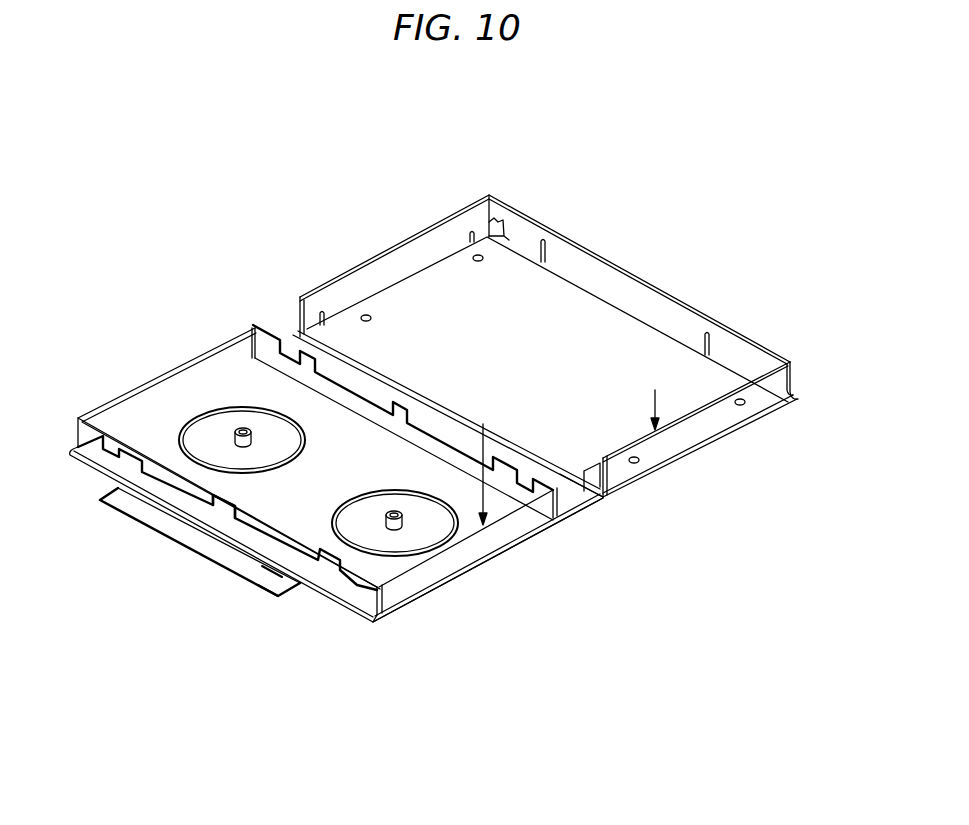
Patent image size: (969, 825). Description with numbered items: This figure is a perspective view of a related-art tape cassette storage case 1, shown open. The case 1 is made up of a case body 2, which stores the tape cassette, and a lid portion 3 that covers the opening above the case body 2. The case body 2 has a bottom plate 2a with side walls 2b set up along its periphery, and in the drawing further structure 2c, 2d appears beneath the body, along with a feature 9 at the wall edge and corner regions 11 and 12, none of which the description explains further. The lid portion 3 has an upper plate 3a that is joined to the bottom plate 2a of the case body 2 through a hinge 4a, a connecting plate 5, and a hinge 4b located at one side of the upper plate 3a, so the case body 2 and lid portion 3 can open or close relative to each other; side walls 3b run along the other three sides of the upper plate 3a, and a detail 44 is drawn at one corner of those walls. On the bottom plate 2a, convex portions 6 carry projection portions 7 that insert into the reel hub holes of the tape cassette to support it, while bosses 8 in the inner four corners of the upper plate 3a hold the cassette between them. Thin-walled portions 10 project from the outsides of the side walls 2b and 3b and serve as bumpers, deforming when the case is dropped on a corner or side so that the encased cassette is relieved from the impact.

The tape cassette storage case 1 is at (248, 225).
The case body 2 is at (163, 352).
The bottom plate 2a is at (237, 372).
The side walls 2b is at (105, 410).
The leg portion 2c is at (258, 574).
The leg portion 2d is at (180, 535).
The lid portion 3 is at (404, 207).
The upper plate 3a is at (573, 310).
The side walls 3b is at (367, 270).
The hinge 4a is at (560, 522).
The hinge 4b is at (610, 500).
The connecting plate 5 is at (585, 498).
The convex portions 6 is at (258, 432).
The projection portions 7 is at (240, 430).
The bosses 8 is at (363, 316).
The engagement tab 9 is at (232, 515).
The thin-walled portions 10 is at (87, 467).
The corner portion 11 is at (385, 630).
The corner portion 12 is at (806, 380).
The engagement bracket 44 is at (515, 218).